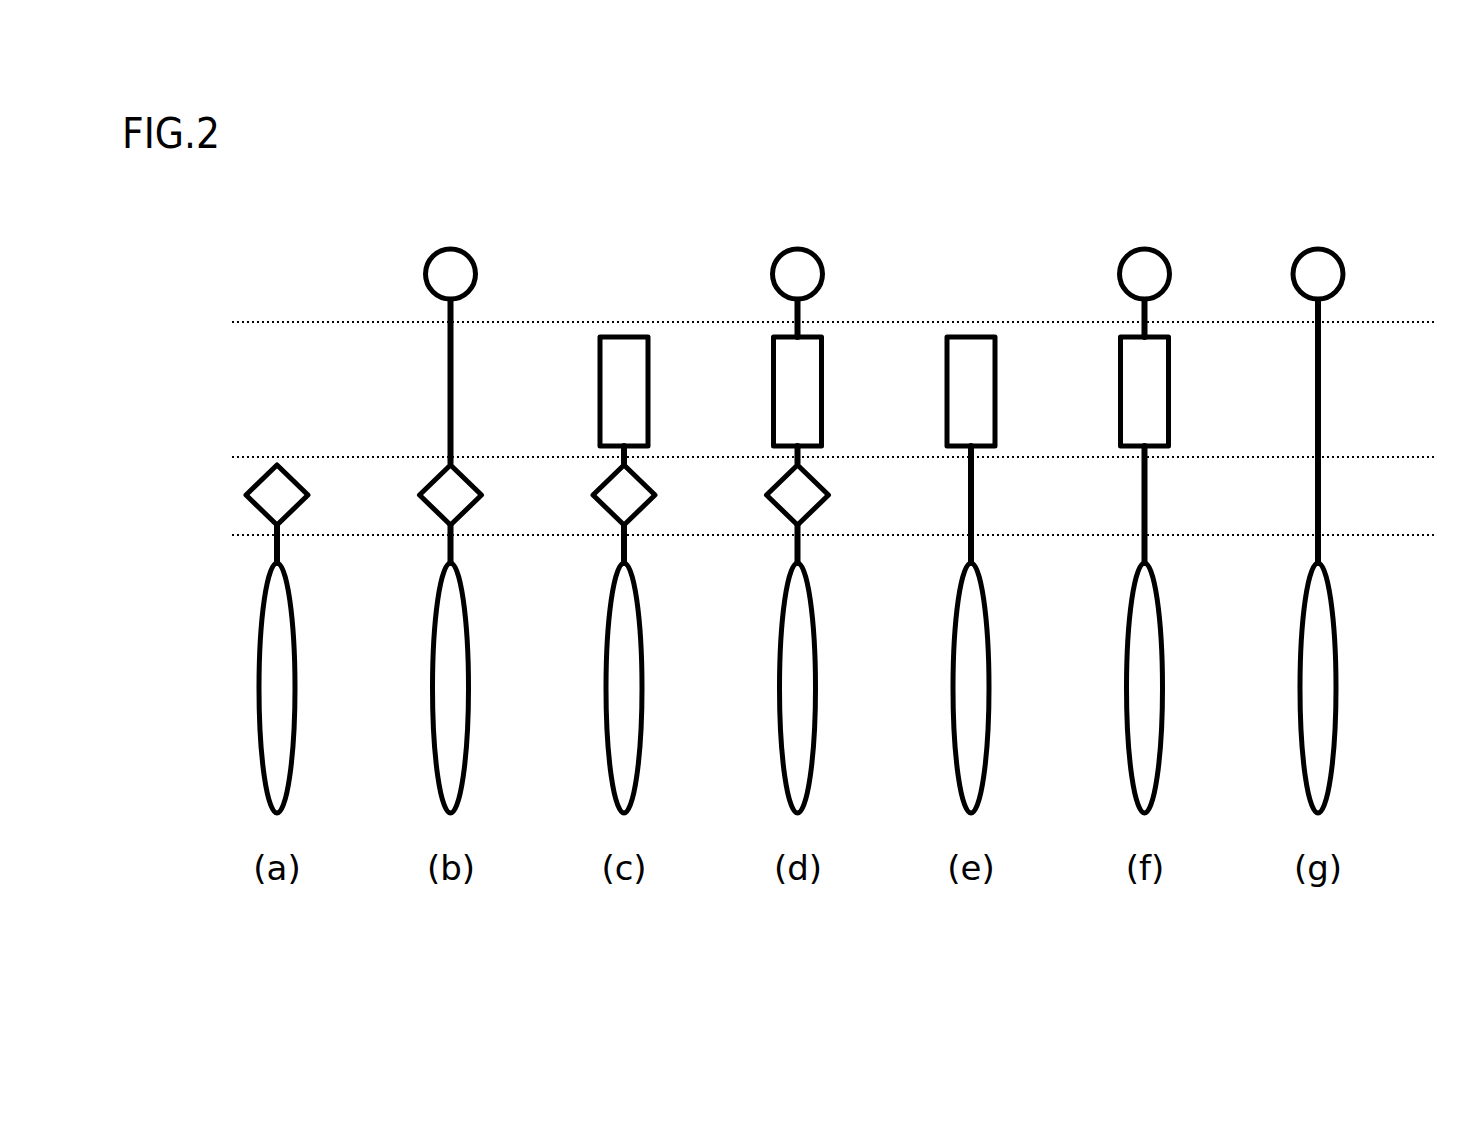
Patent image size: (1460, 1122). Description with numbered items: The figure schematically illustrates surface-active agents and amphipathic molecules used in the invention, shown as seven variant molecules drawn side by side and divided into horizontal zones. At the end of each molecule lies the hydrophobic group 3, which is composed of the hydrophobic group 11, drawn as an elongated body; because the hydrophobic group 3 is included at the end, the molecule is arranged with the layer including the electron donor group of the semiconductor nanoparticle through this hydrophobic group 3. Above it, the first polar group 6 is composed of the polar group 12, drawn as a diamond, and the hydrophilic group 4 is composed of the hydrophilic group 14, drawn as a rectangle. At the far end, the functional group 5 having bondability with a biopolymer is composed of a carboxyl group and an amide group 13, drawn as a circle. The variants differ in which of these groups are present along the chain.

The hydrophobic group 3 is at (203, 542).
The hydrophilic group 4 is at (203, 335).
The functional group having bondability with a biopolymer 5 is at (203, 233).
The first polar group 6 is at (203, 462).
The hydrophobic group 11 is at (287, 695).
The polar group 12 is at (292, 482).
The carboxyl group and amide group 13 is at (463, 295).
The hydrophilic group 14 is at (642, 405).